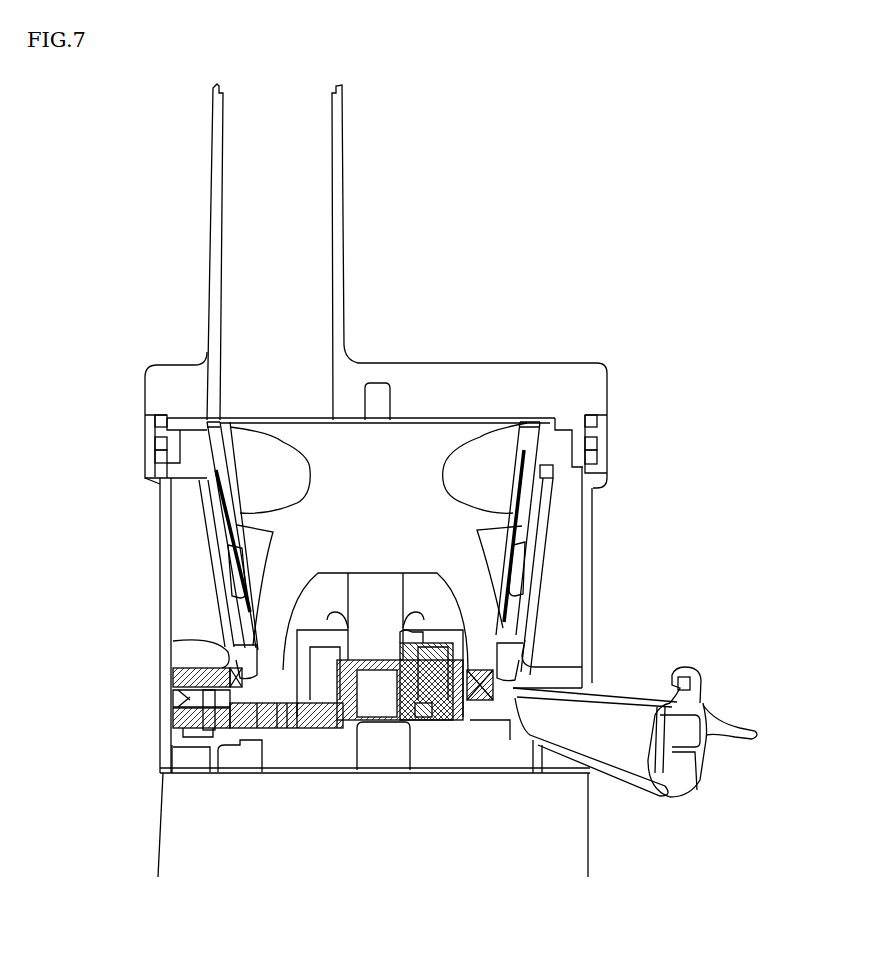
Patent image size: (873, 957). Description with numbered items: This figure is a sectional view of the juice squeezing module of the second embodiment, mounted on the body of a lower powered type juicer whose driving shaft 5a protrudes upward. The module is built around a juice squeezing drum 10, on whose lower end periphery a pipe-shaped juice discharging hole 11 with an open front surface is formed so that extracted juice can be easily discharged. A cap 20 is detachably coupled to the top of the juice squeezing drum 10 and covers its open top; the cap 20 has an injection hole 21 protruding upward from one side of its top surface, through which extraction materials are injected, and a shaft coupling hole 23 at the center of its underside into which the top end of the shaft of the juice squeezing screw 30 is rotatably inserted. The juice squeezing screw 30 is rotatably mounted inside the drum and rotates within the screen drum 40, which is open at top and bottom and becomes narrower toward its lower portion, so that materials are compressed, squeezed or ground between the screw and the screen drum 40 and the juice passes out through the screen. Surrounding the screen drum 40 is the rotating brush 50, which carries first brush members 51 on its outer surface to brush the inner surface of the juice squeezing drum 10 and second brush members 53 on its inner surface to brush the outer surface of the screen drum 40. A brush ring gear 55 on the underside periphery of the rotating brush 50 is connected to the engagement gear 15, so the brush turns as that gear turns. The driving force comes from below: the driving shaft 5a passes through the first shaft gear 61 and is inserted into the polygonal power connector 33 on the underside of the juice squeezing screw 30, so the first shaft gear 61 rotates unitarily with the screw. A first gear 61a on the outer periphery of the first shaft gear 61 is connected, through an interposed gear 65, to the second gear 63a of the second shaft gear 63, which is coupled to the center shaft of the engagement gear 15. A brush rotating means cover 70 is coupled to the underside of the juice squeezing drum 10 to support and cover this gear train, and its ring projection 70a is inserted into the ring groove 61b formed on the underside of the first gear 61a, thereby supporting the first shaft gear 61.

The injection hole 21 is at (344, 135).
The shaft coupling hole 23 is at (388, 387).
The cap 20 is at (493, 363).
The juice squeezing screw 30 is at (461, 512).
The second brush members 53 is at (221, 500).
The screen drum 40 is at (528, 525).
The first brush members 51 is at (187, 530).
The rotating brush 50 is at (192, 584).
The brush ring gear 55 is at (237, 667).
The engagement gear 15 is at (173, 680).
The second shaft gear 63 is at (173, 705).
The second gear 63a is at (173, 722).
The juice squeezing drum 10 is at (600, 628).
The driving shaft 5a is at (403, 723).
The ring projection 70a is at (337, 707).
The first gear 61a is at (276, 706).
The gear 65 is at (320, 710).
The ring groove 61b is at (342, 712).
The first shaft gear 61 is at (462, 720).
The brush rotating means cover 70 is at (218, 742).
The power connector 33 is at (463, 670).
The juice discharging hole 11 is at (640, 683).